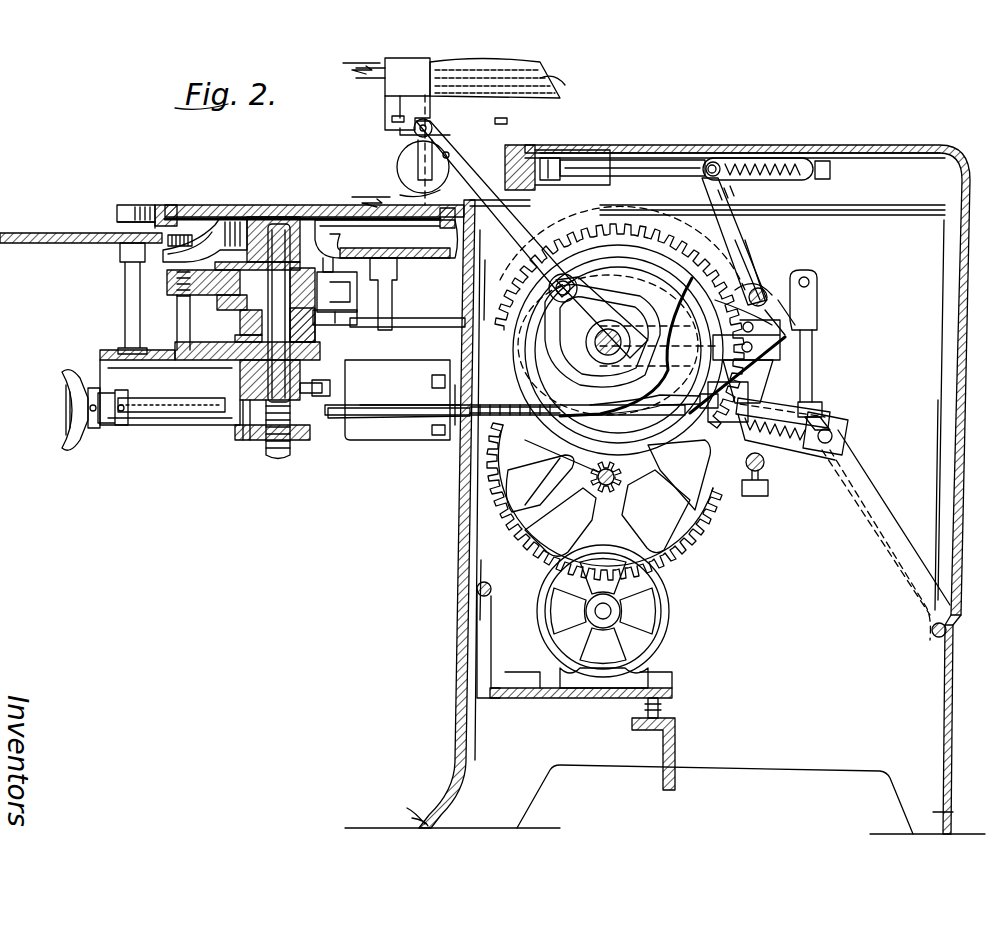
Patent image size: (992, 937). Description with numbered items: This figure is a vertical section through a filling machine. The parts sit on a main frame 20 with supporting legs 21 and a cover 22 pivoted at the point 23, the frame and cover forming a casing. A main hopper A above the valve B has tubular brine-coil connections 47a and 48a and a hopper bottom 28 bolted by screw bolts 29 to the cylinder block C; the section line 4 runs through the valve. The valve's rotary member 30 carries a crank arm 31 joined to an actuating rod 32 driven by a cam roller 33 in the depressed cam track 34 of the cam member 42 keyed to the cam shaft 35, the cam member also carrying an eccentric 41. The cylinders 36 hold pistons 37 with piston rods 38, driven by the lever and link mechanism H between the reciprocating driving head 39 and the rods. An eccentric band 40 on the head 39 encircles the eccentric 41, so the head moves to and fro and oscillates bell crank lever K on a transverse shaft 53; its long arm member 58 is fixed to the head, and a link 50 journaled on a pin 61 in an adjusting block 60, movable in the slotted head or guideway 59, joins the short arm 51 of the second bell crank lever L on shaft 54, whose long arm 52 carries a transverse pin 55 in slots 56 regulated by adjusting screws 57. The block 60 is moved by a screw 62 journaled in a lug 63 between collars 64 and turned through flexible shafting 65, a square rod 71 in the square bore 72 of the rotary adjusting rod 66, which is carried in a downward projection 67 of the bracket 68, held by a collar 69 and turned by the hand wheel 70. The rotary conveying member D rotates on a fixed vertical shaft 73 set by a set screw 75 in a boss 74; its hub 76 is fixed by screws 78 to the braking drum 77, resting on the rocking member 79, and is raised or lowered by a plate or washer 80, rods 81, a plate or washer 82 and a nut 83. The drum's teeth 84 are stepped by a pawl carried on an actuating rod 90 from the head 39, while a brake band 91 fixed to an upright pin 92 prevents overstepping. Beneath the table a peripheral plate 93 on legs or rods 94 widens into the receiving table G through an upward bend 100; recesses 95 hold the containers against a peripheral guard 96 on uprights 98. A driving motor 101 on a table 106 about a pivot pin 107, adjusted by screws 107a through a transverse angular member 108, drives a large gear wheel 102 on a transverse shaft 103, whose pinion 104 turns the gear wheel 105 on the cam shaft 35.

The main frame 20 is at (460, 655).
The supporting legs 21 is at (425, 818).
The cover 22 is at (915, 150).
The pivot point 23 is at (930, 636).
The main hopper A is at (538, 90).
The section line 4— 4 is at (366, 124).
The tubular connection 47a is at (385, 90).
The tubular connection 48a is at (584, 78).
The hopper bottom 28 is at (395, 98).
The screw bolts 29 is at (393, 122).
The rotary member 30 is at (397, 168).
The crank arm 31 is at (415, 150).
The valve B is at (395, 168).
The actuating rod 32 is at (482, 162).
The cylinder block C is at (535, 148).
The piston 37 is at (612, 132).
The cylinders 36 is at (640, 150).
The piston rod 38 is at (712, 155).
The transverse pin 55 is at (718, 165).
The slots 56 is at (790, 160).
The adjusting screw 57 is at (822, 160).
The long arm 52 is at (743, 210).
The second bell crank lever L is at (755, 248).
The shaft 54 is at (765, 290).
The short arm 51 is at (815, 262).
The lever and link mechanism H is at (820, 312).
The reciprocating driving head 39 is at (785, 345).
The link 50 is at (840, 348).
The bell crank lever K is at (770, 372).
The long arm member 58 is at (815, 390).
The screw 62 is at (830, 412).
The adjusting block 60 is at (850, 428).
The slotted head or guideway 59 is at (842, 458).
The pin 61 is at (825, 460).
The transverse shaft 53 is at (768, 472).
The cam roller 33 is at (532, 285).
The cam track 34 is at (530, 300).
The cam shaft 35 is at (619, 345).
The cam member 42 is at (520, 340).
The eccentric band 40 is at (626, 347).
The lug 63 is at (740, 398).
The eccentric 41 is at (521, 399).
The large gear wheel 102 is at (685, 565).
The flexible shafting 65 is at (614, 482).
The gear wheel 105 is at (540, 483).
The square rod 71 is at (540, 448).
The pinion 104 is at (560, 522).
The transverse shaft 103 is at (656, 511).
The collars 64 is at (690, 470).
The driving motor 101 is at (670, 628).
The table 106 is at (505, 698).
The pivot pin 107 is at (476, 590).
The adjusting screws 107a is at (662, 706).
The transverse angular member 108 is at (655, 728).
The receiving table G is at (80, 232).
The rotary conveying member D is at (153, 202).
The recesses 95 is at (128, 205).
The peripheral guard 96 is at (172, 208).
The upward bend 100 is at (185, 228).
The hub 76 is at (305, 215).
The screws 78 is at (300, 228).
The peripheral plate 93 is at (395, 258).
The uprights 98 is at (406, 294).
The brake band 91 is at (175, 290).
The upright pin 92 is at (167, 282).
The teeth 84 is at (178, 312).
The braking drum 77 is at (238, 312).
The rocking member 79 is at (240, 338).
The legs or rods 94 is at (124, 325).
The plate or washer 80 is at (323, 332).
The actuating rod 90 is at (455, 318).
The fixed vertical shaft 73 is at (240, 377).
The boss 74 is at (240, 385).
The downward projection 67 is at (112, 392).
The collar 69 is at (115, 422).
The hand wheel 70 is at (68, 446).
The set screw 75 is at (326, 382).
The rods 81 is at (243, 420).
The plate or washer 82 is at (240, 440).
The nut 83 is at (262, 458).
The rotary adjusting rod 66 is at (370, 420).
The bracket 68 is at (412, 440).
The square bore 72 is at (458, 460).